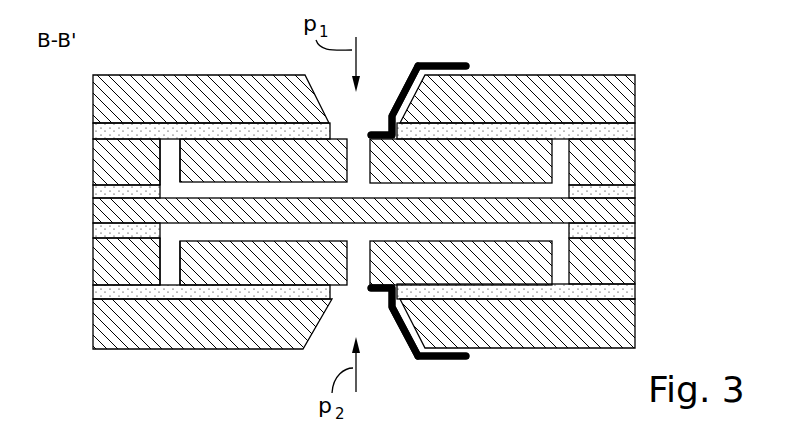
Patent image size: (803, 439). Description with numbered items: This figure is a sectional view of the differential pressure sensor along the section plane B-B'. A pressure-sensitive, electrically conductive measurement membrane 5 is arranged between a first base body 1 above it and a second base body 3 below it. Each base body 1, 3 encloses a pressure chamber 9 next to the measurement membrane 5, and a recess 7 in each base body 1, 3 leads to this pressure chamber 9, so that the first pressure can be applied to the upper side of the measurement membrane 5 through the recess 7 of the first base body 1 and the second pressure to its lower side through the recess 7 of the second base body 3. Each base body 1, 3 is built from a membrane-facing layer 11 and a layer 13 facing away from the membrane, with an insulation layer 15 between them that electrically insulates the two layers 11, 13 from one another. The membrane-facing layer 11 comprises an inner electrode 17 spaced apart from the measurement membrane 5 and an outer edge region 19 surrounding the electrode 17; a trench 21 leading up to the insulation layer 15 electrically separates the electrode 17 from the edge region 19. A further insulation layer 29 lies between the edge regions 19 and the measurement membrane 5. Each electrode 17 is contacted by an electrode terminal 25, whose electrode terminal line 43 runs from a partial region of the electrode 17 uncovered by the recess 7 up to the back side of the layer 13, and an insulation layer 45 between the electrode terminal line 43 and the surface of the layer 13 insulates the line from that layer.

The first base body 1 is at (722, 72).
The second base body 3 is at (722, 230).
The measurement membrane 5 is at (628, 210).
The recess 7 is at (363, 117).
The pressure chamber 9 is at (493, 192).
The membrane-facing layer 11 is at (642, 165).
The layer facing away from the membrane 13 is at (642, 97).
The insulation layer 15 is at (627, 130).
The electrode 17 is at (263, 158).
The outer edge region 19 is at (100, 162).
The trench 21 is at (171, 158).
The electrode terminal 25 is at (403, 57).
The insulation layer 29 is at (100, 193).
The electrode terminal line 43 is at (453, 61).
The insulation layer 45 is at (397, 103).